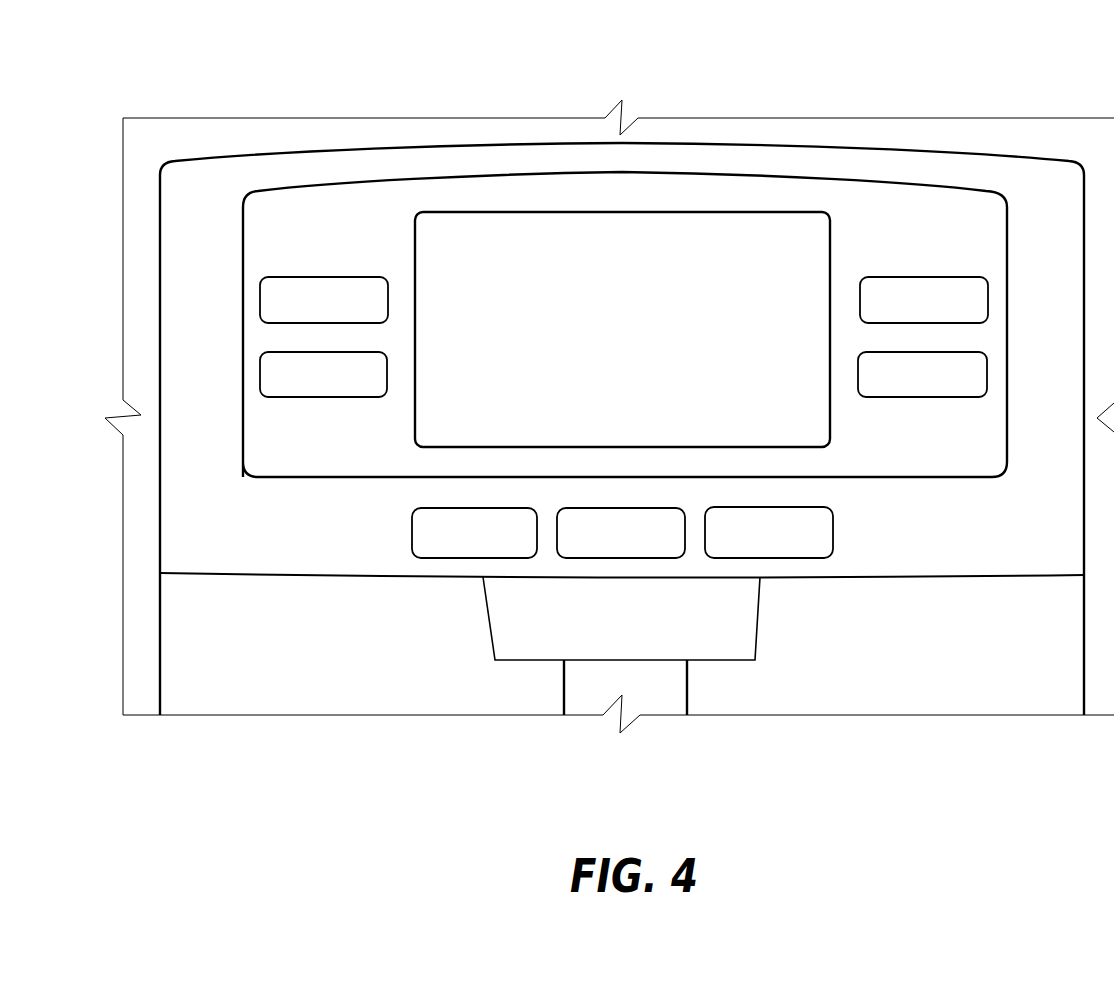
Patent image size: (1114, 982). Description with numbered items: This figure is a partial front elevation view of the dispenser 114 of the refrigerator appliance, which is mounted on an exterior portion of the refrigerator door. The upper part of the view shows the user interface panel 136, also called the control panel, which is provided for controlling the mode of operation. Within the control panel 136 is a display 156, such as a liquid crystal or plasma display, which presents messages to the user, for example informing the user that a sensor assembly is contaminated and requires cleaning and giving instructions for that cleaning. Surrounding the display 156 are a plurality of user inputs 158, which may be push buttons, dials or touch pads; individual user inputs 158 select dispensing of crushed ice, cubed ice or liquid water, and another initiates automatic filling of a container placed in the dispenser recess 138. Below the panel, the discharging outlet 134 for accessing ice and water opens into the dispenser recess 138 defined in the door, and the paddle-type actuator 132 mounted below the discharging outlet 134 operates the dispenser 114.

The dispenser 114 is at (878, 702).
The actuator 132 is at (675, 703).
The discharging outlet 134 is at (526, 663).
The user interface panel 136 is at (180, 142).
The dispenser recess 138 is at (298, 683).
The display 156 is at (605, 323).
The user inputs 158 is at (288, 277).